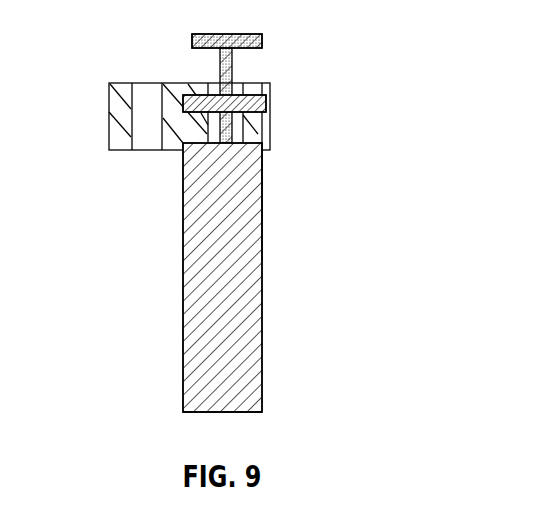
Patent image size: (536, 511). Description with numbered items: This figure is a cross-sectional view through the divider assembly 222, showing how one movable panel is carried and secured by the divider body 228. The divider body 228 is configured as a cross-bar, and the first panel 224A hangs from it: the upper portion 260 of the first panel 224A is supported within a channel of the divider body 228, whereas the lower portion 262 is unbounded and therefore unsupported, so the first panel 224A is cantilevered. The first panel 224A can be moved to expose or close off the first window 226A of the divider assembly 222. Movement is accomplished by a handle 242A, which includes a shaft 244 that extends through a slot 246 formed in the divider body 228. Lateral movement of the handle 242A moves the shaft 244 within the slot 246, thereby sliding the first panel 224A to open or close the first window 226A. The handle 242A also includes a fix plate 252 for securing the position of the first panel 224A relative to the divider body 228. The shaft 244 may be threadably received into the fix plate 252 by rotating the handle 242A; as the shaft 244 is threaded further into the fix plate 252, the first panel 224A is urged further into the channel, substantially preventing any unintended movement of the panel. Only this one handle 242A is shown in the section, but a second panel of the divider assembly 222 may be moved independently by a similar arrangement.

The divider assembly 222 is at (346, 39).
The handle 242A is at (217, 34).
The shaft 244 is at (233, 76).
The fix plate 252 is at (268, 99).
The slot 246 is at (238, 135).
The divider body 228 is at (166, 126).
The first window 226A is at (180, 138).
The upper portion 260 is at (263, 185).
The first panel 224A is at (262, 362).
The lower portion 262 is at (215, 413).